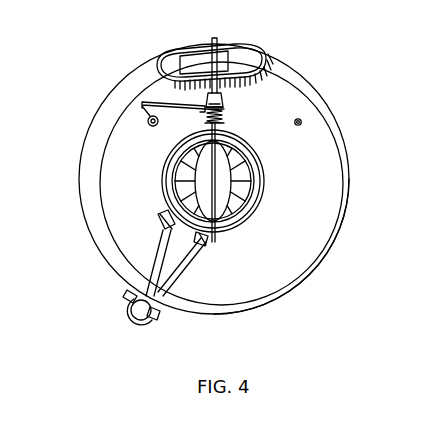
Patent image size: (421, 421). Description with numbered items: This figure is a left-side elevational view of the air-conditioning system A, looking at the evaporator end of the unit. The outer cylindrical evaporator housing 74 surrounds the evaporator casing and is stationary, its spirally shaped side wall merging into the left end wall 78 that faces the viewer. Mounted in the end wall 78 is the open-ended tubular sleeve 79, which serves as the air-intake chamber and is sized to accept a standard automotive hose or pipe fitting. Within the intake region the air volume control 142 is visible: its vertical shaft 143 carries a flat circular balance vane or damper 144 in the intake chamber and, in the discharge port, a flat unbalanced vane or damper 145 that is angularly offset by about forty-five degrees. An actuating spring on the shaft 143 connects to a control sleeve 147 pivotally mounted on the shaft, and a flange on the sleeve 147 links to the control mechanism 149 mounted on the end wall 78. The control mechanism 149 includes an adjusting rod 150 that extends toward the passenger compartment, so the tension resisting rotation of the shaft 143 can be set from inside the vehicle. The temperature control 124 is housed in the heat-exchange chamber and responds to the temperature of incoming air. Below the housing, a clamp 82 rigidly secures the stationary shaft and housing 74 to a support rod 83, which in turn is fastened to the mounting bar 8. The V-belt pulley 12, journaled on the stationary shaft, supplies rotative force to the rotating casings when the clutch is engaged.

The V-belt pulley 12 is at (92, 232).
The outer cylindrical evaporator housing 74 is at (302, 270).
The left end wall 78 is at (312, 228).
The air-conditioning system A is at (310, 70).
The temperature control 124 is at (302, 122).
The unbalanced vane or damper 145 is at (212, 58).
The vertical shaft 143 is at (217, 40).
The control sleeve 147 is at (224, 100).
The air volume control 142 is at (226, 117).
The control mechanism 149 is at (172, 101).
The adjusting rod 150 is at (147, 121).
The clamp 82 is at (243, 219).
The tubular sleeve 79 is at (197, 180).
The balance vane or damper 144 is at (232, 183).
The support rod 83 is at (188, 260).
The mounting bar 8 is at (148, 318).